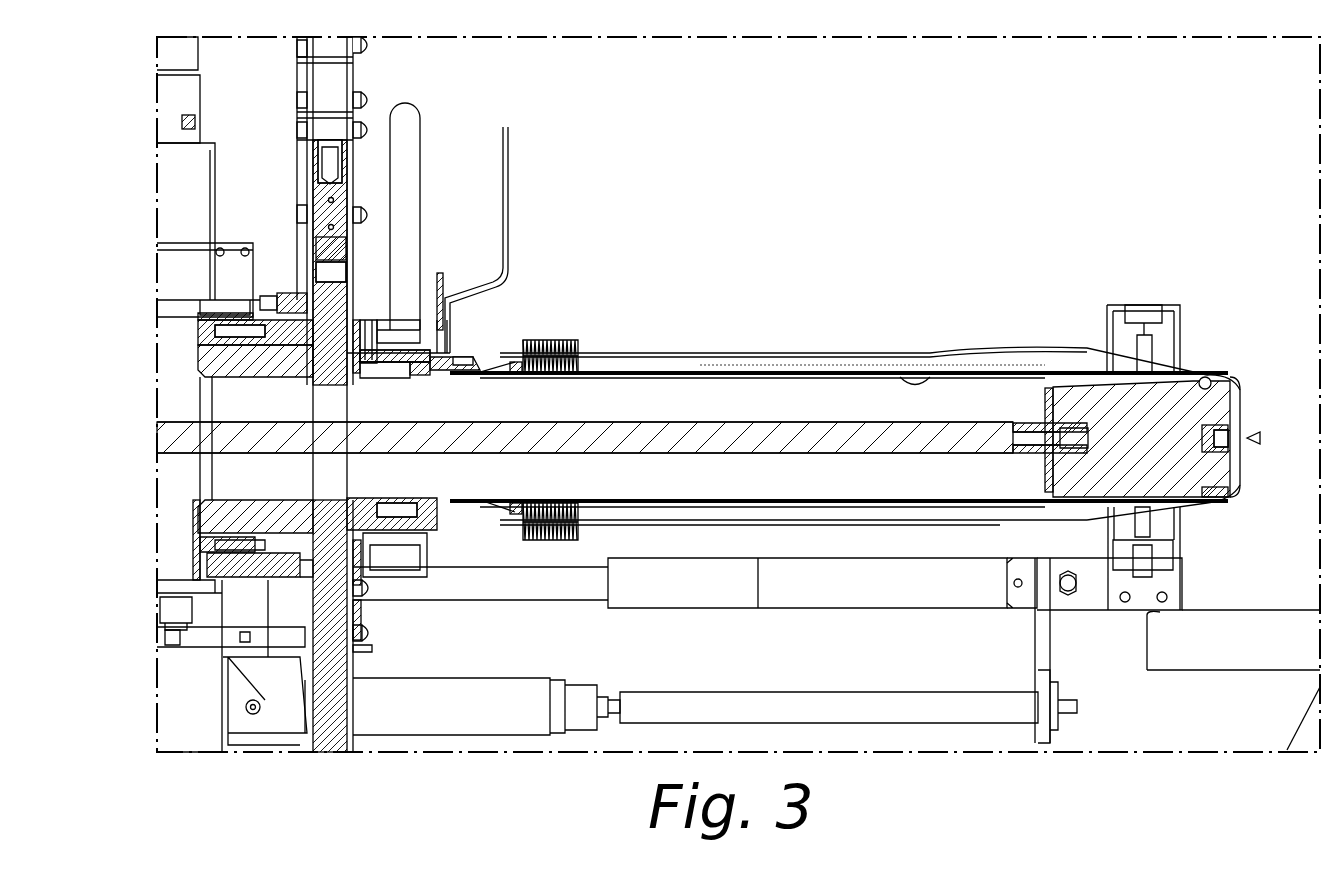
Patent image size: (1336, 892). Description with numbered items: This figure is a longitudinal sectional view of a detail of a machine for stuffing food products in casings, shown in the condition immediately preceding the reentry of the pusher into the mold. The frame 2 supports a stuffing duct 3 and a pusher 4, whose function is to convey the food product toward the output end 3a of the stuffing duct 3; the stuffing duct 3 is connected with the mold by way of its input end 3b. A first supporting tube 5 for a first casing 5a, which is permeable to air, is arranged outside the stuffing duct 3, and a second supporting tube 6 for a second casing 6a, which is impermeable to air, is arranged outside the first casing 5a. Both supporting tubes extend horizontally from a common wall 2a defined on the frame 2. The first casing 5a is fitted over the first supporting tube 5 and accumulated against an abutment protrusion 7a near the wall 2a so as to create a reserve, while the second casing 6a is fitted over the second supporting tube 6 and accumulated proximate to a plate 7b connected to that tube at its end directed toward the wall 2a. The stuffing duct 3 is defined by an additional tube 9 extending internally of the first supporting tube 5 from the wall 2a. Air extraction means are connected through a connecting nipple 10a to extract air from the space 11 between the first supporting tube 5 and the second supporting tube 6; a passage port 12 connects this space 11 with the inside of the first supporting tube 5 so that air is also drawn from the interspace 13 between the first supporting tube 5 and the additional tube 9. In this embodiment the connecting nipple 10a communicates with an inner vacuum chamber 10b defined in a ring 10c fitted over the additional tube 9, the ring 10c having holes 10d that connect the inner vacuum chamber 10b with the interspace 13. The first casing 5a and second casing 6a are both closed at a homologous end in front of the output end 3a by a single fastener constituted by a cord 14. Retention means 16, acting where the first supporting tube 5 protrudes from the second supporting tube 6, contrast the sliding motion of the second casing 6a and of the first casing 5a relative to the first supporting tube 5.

The frame 2 is at (205, 710).
The common wall 2a is at (355, 70).
The stuffing duct 3 is at (997, 400).
The output end 3a is at (1217, 377).
The input end 3b is at (347, 483).
The pusher 4 is at (1044, 470).
The first supporting tube 5 is at (485, 378).
The first casing 5a is at (595, 372).
The second supporting tube 6 is at (655, 357).
The second casing 6a is at (843, 353).
The abutment protrusion 7a is at (512, 372).
The plate 7b is at (437, 263).
The additional tube 9 is at (928, 383).
The connecting nipple 10a is at (402, 165).
The inner vacuum chamber 10b is at (383, 373).
The ring 10c is at (477, 292).
The holes 10d is at (423, 377).
The space 11 is at (758, 367).
The passage port 12 is at (500, 366).
The interspace 13 is at (443, 374).
The cord 14 is at (1260, 440).
The retention means 16 is at (1182, 325).